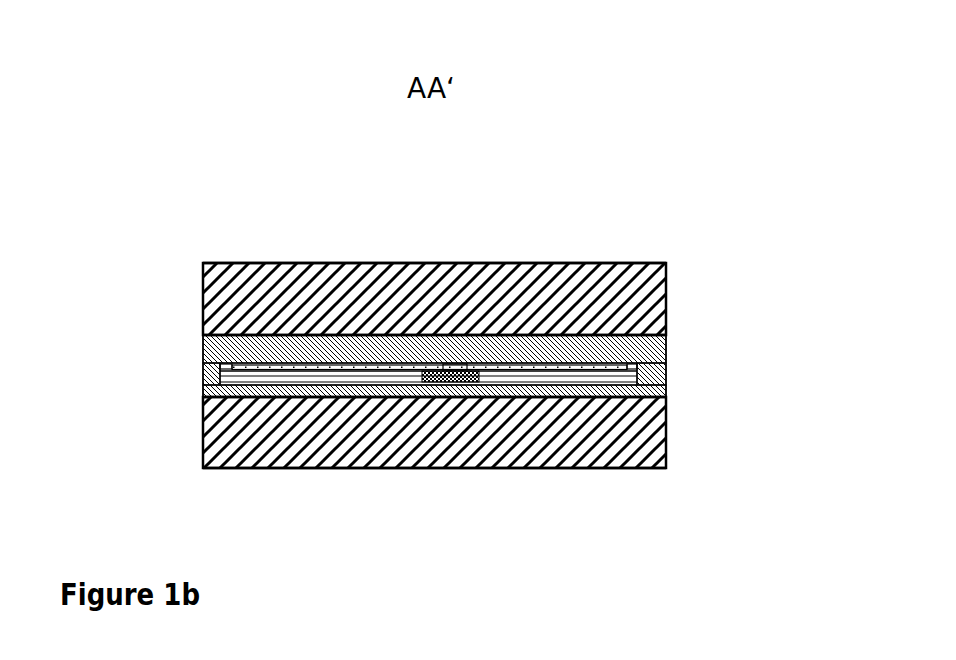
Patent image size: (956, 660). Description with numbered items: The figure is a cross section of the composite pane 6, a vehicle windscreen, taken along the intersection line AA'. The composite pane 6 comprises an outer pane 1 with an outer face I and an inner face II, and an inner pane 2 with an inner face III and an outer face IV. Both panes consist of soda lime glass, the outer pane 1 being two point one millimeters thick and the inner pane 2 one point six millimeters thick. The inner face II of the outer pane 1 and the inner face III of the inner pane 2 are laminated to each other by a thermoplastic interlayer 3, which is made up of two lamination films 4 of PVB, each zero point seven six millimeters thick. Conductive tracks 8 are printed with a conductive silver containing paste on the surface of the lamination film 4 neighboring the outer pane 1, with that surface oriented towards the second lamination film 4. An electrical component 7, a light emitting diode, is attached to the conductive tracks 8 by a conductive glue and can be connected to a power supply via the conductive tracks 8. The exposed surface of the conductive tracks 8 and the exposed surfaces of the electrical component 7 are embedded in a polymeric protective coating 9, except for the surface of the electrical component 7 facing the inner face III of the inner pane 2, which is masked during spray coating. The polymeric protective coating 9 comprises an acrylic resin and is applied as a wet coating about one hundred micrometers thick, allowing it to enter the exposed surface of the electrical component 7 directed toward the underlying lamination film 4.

The outer pane 1 is at (642, 303).
The inner pane 2 is at (648, 432).
The thermoplastic interlayer 3 is at (666, 336).
The lamination films 4 is at (215, 383).
The composite pane 6 is at (593, 203).
The electrical component 7 is at (455, 373).
The conductive tracks 8 is at (264, 368).
The polymeric protective coating 9 is at (457, 366).
The outer face I is at (310, 260).
The inner face II is at (288, 330).
The inner face III is at (318, 399).
The outer face IV is at (318, 472).